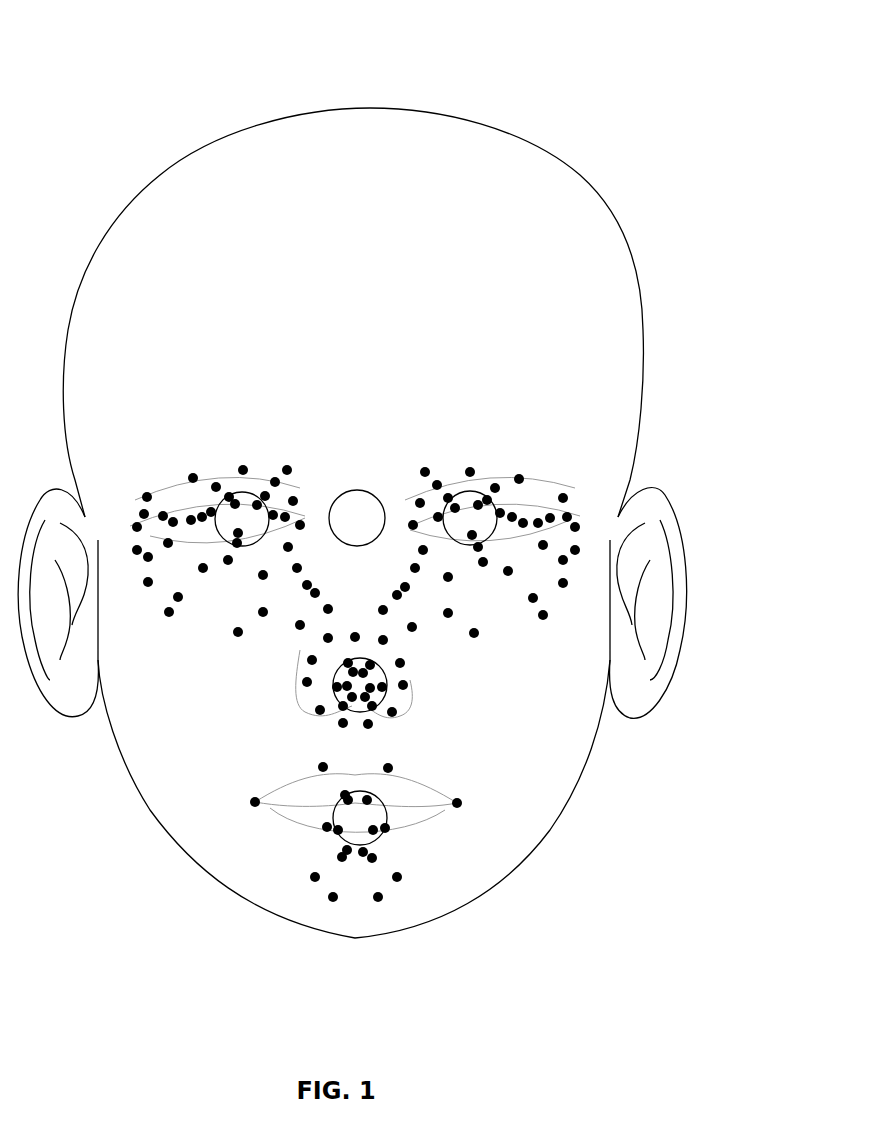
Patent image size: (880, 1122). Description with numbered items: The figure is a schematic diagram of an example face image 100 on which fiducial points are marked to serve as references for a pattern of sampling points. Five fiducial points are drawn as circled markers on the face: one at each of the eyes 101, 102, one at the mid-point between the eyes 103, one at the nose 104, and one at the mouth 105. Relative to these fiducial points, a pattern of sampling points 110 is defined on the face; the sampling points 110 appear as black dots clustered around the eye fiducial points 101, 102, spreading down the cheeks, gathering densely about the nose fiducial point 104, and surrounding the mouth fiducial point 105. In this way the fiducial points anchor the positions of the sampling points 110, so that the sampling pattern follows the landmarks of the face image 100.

The face image 100 is at (116, 72).
The eye fiducial point 101 is at (245, 492).
The eye fiducial point 102 is at (481, 502).
The mid-point between the eyes 103 is at (372, 491).
The nose fiducial point 104 is at (385, 672).
The mouth fiducial point 105 is at (387, 825).
The sampling points 110 is at (147, 493).